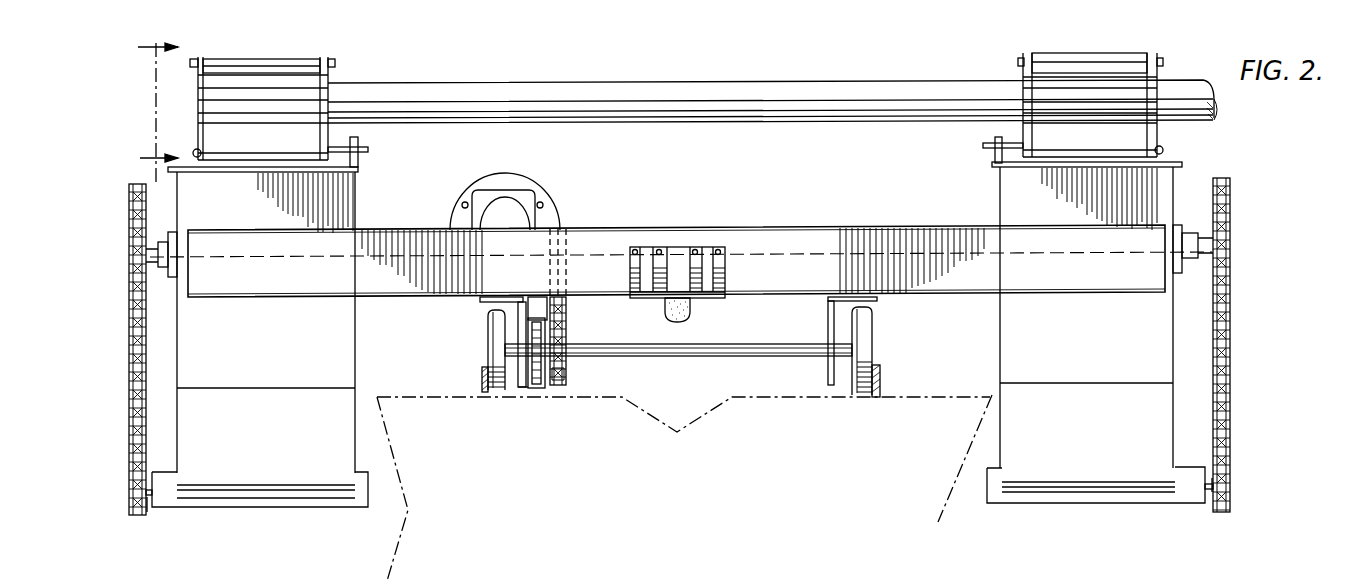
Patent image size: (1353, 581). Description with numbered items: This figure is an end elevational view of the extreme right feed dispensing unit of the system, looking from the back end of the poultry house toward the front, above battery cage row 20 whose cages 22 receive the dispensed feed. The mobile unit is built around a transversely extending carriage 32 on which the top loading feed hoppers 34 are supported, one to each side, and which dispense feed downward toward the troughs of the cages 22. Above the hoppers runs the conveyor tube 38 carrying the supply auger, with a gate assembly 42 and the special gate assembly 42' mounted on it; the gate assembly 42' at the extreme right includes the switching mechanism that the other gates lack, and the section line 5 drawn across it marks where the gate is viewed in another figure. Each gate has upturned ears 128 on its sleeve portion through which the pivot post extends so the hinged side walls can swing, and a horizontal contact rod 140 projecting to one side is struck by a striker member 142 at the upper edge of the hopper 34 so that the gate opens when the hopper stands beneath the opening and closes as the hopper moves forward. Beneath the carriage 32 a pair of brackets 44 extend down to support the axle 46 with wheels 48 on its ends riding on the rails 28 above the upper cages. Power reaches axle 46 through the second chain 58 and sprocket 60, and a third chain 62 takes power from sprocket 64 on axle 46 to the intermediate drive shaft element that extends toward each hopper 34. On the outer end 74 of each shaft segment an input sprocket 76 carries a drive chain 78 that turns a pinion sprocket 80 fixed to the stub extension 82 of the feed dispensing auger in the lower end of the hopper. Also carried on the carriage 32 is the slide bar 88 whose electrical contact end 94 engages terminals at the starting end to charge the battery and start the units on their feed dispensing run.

The section line 5- 5 is at (158, 112).
The battery cage row 20 is at (376, 550).
The cage 22 is at (548, 508).
The rail 28 is at (483, 380).
The carriage 32 is at (770, 243).
The feed hopper 34 is at (332, 208).
The conveyor tube 38 is at (683, 89).
The gate assembly 42 is at (1090, 105).
The gate assembly 42' is at (262, 108).
The bracket 44 is at (520, 305).
The axle 46 is at (700, 350).
The wheel 48 is at (496, 338).
The second chain 58 is at (529, 388).
The sprocket 60 is at (540, 335).
The third chain 62 is at (566, 312).
The sprocket 64 is at (562, 372).
The outer end 74 is at (147, 266).
The input sprocket 76 is at (130, 258).
The drive chain 78 is at (128, 353).
The pinion sprocket 80 is at (132, 493).
The stub extension 82 is at (149, 508).
The slide bar 88 is at (680, 318).
The electrical contact end 94 is at (622, 275).
The upturned ear 128 is at (676, 580).
The contact rod 140 is at (371, 149).
The striker member 142 is at (360, 163).